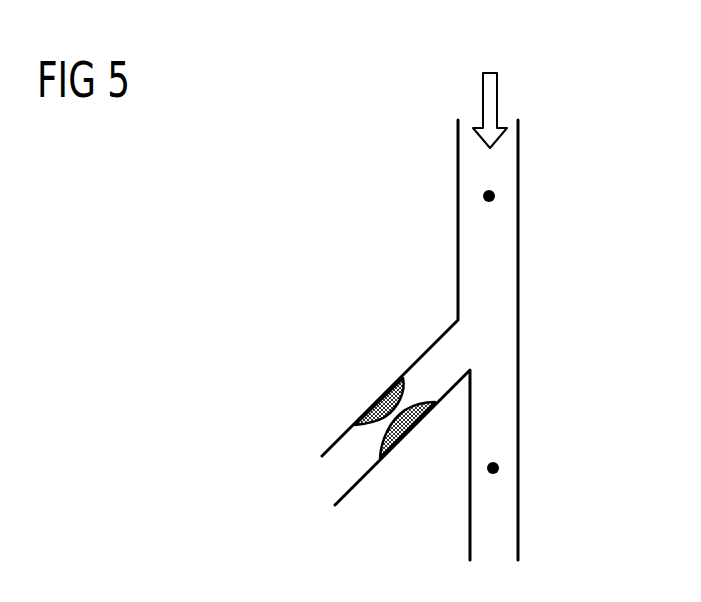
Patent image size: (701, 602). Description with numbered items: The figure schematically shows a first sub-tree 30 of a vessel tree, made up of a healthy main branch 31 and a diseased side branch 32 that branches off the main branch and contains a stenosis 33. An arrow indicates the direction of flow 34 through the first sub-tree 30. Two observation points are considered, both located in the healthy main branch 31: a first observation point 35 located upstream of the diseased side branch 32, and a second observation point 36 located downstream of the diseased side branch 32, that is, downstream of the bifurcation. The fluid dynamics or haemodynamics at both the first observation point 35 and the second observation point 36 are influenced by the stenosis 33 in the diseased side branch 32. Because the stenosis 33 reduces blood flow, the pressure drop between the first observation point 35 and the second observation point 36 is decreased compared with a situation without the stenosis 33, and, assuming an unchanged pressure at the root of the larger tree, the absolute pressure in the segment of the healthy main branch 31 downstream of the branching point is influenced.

The first sub-tree 30 is at (351, 204).
The healthy main branch 31 is at (518, 152).
The diseased side branch 32 is at (347, 428).
The stenosis 33 is at (380, 403).
The direction of flow 34 is at (487, 97).
The first observation point 35 is at (489, 196).
The second observation point 36 is at (493, 468).